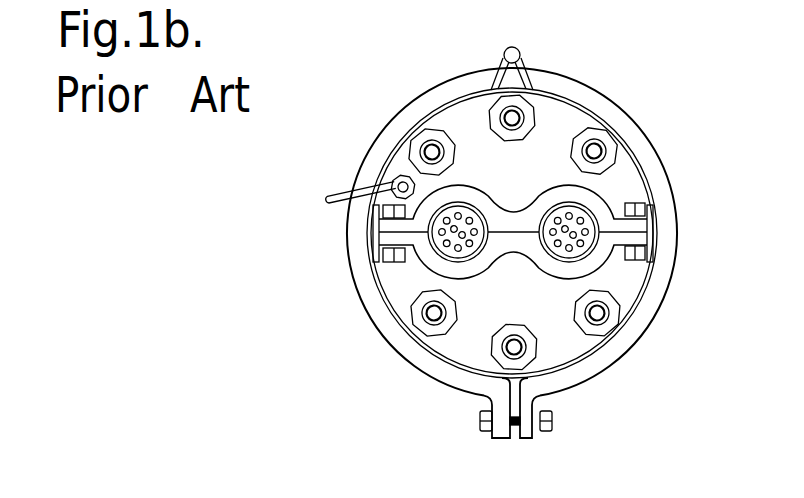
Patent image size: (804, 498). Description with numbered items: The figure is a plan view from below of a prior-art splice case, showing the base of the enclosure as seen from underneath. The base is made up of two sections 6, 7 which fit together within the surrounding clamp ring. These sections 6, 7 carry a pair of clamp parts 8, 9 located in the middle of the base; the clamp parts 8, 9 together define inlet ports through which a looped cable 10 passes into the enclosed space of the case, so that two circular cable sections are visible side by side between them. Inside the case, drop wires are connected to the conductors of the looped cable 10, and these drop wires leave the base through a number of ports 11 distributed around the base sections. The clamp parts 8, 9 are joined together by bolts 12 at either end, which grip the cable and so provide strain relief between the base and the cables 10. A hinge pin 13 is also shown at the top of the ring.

The base section 6 is at (458, 130).
The base section 7 is at (403, 283).
The clamp part 8 is at (600, 198).
The clamp part 9 is at (603, 258).
The looped cable 10 is at (563, 213).
The ports 11 is at (513, 117).
The bolts 12 is at (383, 255).
The hinge pin 13 is at (512, 45).